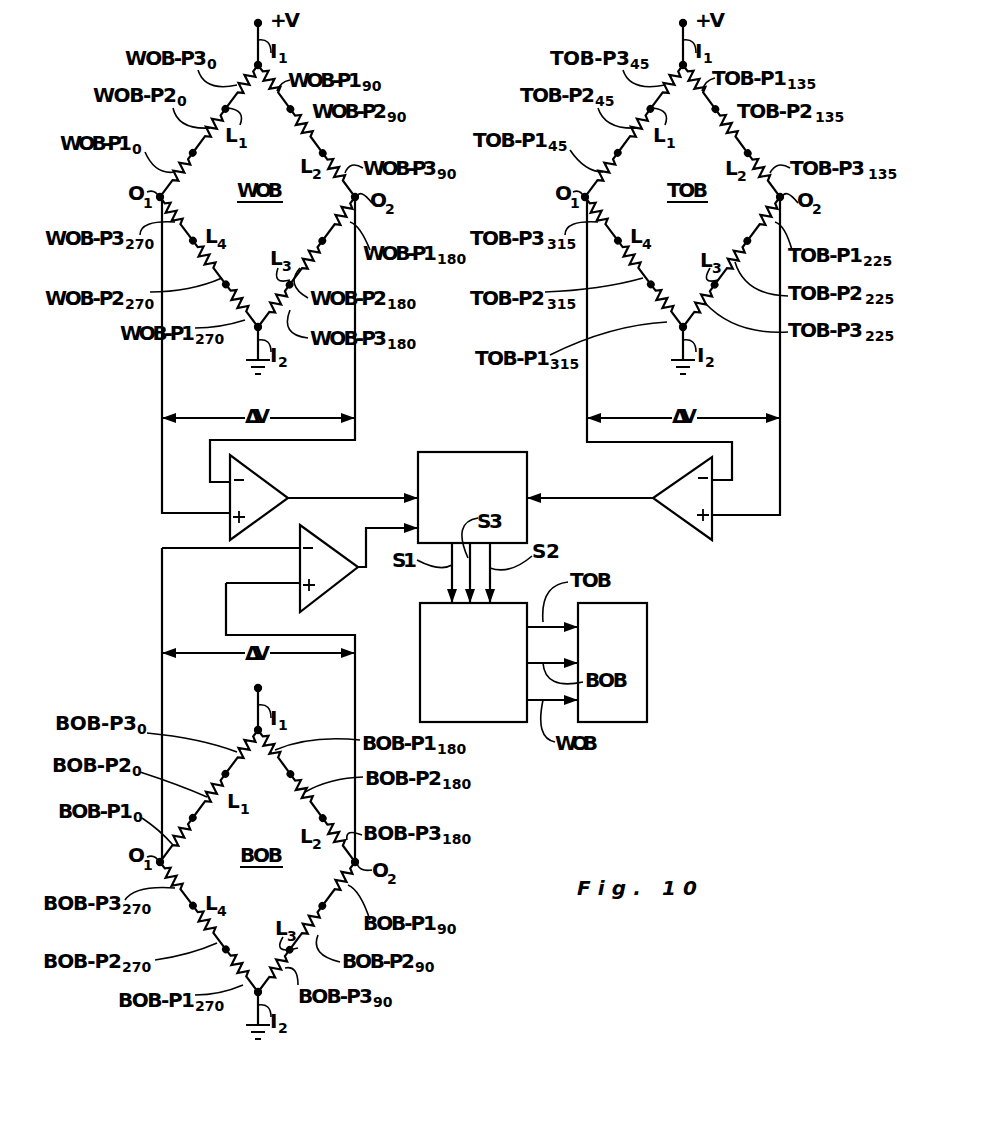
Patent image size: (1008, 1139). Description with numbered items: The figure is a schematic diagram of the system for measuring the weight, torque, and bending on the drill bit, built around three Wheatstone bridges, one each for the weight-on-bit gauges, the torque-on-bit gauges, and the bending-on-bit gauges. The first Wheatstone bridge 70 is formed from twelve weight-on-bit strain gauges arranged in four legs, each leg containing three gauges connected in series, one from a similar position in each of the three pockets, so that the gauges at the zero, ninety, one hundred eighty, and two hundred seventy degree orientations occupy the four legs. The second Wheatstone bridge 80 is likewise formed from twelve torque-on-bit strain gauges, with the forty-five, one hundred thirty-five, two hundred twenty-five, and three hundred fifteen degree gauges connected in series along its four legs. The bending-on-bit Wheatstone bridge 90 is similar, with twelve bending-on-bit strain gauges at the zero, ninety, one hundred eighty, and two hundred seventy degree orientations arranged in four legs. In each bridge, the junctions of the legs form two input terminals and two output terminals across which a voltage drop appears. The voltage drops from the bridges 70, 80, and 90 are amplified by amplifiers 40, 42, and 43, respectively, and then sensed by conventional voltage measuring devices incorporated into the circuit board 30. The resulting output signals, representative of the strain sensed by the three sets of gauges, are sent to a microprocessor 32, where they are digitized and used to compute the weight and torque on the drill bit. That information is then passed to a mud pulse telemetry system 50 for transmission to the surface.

The circuit board 30 is at (518, 479).
The microprocessor 32 is at (518, 632).
The amplifier 40 is at (269, 506).
The amplifier 42 is at (696, 507).
The amplifier 43 is at (339, 577).
The mud pulse telemetry system 50 is at (643, 632).
The first Wheatstone bridge 70 is at (325, 153).
The second Wheatstone bridge 80 is at (752, 153).
The BOB Wheatstone bridge 90 is at (325, 818).